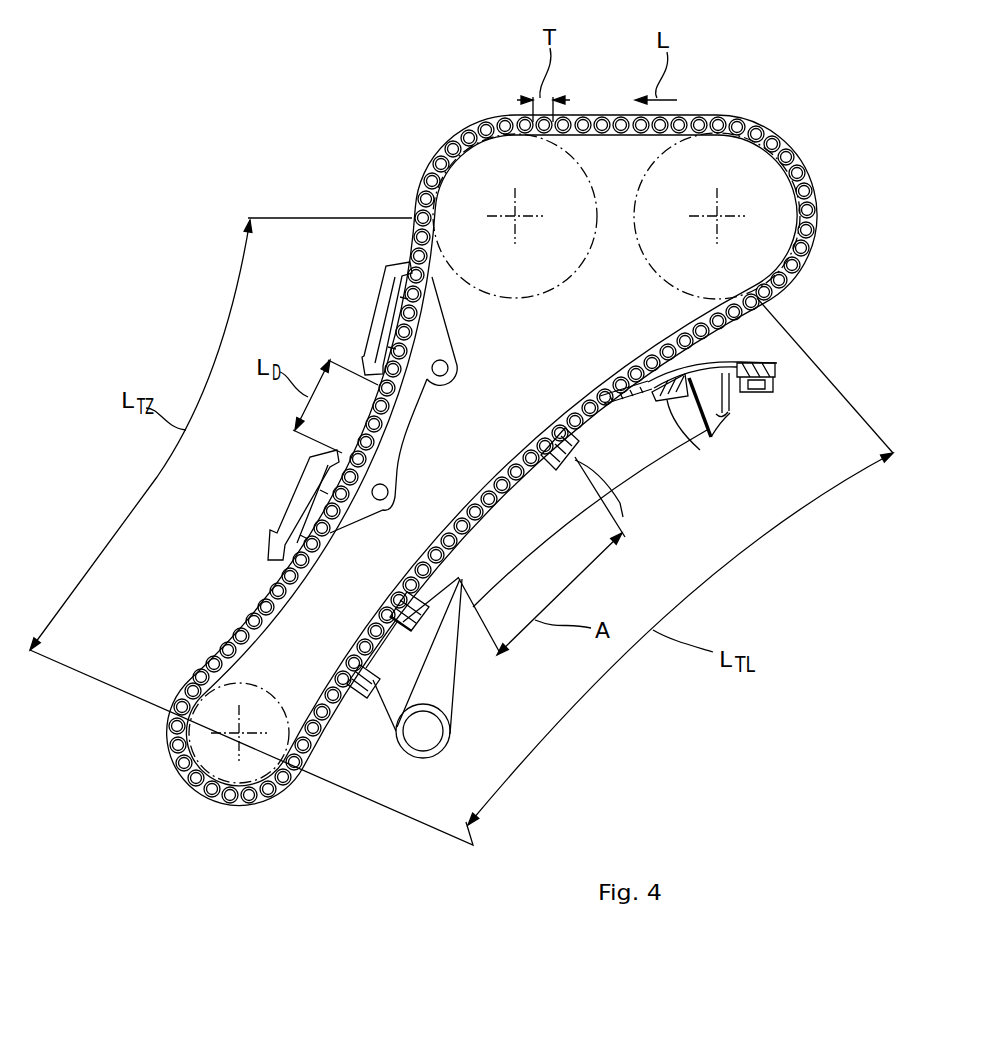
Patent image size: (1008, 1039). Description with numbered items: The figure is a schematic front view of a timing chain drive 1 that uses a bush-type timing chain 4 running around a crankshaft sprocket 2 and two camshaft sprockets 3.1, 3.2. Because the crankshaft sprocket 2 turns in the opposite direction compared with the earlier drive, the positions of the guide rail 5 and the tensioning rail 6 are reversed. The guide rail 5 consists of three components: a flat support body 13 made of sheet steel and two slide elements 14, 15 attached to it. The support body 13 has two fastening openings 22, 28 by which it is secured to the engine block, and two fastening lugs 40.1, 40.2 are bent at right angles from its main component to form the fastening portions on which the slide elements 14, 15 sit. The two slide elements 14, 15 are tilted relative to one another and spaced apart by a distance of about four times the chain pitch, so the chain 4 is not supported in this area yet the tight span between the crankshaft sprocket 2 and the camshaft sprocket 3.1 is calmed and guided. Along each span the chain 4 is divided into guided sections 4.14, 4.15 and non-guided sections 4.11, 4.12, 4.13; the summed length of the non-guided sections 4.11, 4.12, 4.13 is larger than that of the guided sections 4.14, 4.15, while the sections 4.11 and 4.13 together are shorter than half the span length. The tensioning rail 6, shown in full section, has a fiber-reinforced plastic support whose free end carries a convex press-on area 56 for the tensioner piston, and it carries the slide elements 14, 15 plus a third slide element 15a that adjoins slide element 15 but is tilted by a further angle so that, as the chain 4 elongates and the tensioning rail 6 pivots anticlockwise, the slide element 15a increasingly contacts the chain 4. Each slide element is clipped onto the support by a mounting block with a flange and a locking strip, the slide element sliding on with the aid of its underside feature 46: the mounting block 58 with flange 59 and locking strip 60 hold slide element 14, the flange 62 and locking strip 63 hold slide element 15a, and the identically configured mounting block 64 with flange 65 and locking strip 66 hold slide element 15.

The timing chain drive 1 is at (375, 88).
The crankshaft sprocket 2 is at (230, 763).
The camshaft sprocket 3.1 is at (505, 160).
The camshaft sprocket 3.2 is at (738, 175).
The timing chain 4 is at (623, 116).
The non-guided section 4.11 is at (436, 290).
The non-guided section 4.12 is at (367, 405).
The non-guided section 4.13 is at (245, 650).
The guided section 4.14 is at (442, 382).
The guided section 4.15 is at (330, 533).
The guide rail 5 is at (416, 440).
The tensioning rail 6 is at (558, 538).
The support body 13 is at (448, 338).
The slide element 14 is at (395, 268).
The slide element 15 is at (318, 455).
The slide element 15a is at (745, 364).
The fastening opening 22 is at (450, 368).
The fastening opening 28 is at (390, 493).
The fastening lug 40.1 is at (380, 325).
The fastening lug 40.2 is at (300, 507).
The sliding pad 46 is at (358, 664).
The press-on area 56 is at (725, 413).
The mounting block 58 is at (393, 617).
The flange 59 is at (375, 700).
The locking strip 60 is at (405, 597).
The flange 62 is at (700, 440).
The locking strip 63 is at (742, 395).
The mounting block 64 is at (582, 397).
The flange 65 is at (623, 517).
The locking strip 66 is at (640, 370).